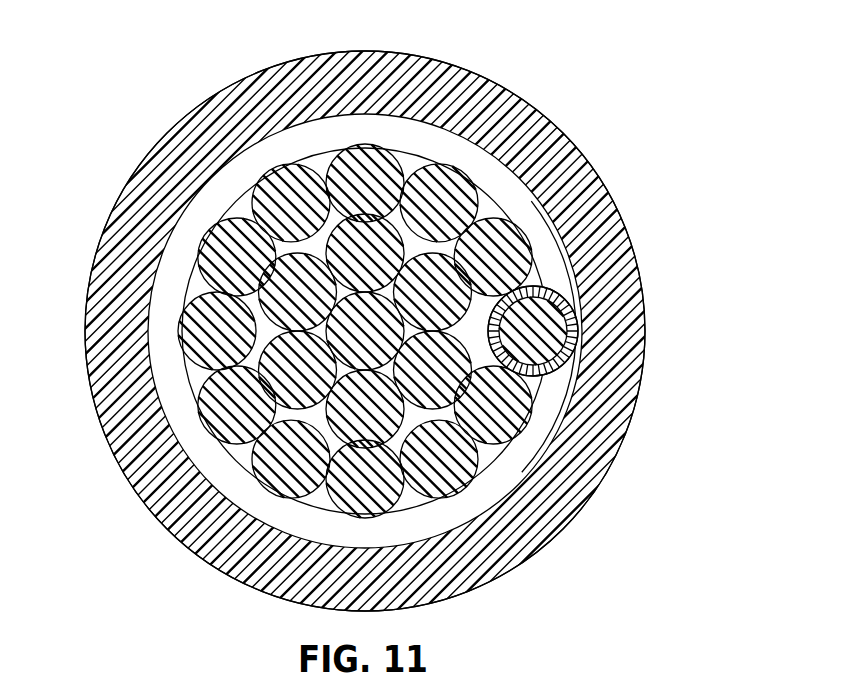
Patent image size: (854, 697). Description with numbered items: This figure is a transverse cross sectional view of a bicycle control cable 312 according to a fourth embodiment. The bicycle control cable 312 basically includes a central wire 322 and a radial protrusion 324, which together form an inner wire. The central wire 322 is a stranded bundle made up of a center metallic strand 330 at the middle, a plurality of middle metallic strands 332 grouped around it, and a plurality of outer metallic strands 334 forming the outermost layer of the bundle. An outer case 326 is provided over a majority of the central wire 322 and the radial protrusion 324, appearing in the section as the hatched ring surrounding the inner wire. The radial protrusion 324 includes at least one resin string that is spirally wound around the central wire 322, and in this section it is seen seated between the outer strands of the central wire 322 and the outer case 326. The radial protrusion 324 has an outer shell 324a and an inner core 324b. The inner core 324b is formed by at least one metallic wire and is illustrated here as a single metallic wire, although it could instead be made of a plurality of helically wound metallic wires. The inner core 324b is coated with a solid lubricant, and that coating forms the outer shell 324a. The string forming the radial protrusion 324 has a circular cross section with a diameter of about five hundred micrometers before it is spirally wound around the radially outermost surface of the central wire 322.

The bicycle control cable 312 is at (584, 86).
The central wire 322 is at (504, 189).
The radial protrusion 324 is at (712, 243).
The outer shell 324a is at (572, 318).
The inner core 324b is at (548, 332).
The outer case 326 is at (579, 530).
The center metallic strand 330 is at (353, 320).
The middle metallic strands 332 is at (290, 292).
The outer metallic strands 334 is at (235, 407).